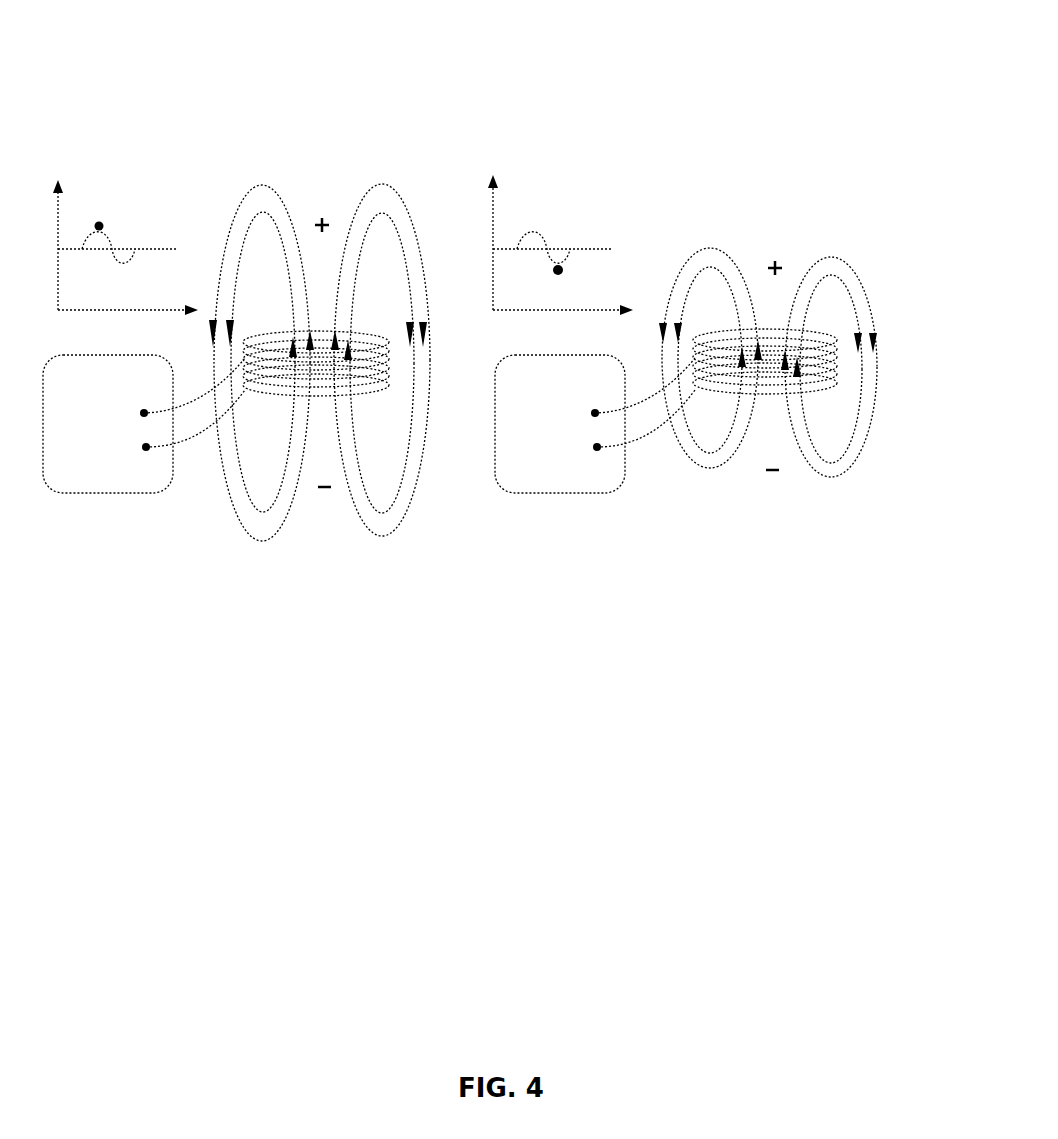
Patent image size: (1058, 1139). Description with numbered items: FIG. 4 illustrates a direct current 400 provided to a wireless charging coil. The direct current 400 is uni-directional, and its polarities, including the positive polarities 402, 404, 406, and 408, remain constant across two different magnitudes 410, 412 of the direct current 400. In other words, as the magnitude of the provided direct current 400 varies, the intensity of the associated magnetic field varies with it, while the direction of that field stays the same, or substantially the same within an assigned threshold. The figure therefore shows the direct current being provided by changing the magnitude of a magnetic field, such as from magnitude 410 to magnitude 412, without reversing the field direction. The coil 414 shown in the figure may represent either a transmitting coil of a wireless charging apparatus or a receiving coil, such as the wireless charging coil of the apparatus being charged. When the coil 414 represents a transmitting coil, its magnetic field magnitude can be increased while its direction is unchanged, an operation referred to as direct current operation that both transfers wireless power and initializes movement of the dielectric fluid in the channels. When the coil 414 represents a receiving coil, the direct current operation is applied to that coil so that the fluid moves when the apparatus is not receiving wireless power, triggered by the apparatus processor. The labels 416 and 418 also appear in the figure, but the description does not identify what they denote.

The direct current 400 is at (878, 64).
The positive polarity 402 is at (328, 212).
The positive polarity 404 is at (778, 258).
The positive polarity 406 is at (327, 490).
The positive polarity 408 is at (775, 473).
The magnitude 410 is at (270, 524).
The magnitude 412 is at (722, 465).
The coil 414 is at (749, 766).
The first coil arrangement 416 is at (326, 766).
The coil windings 418 is at (728, 385).